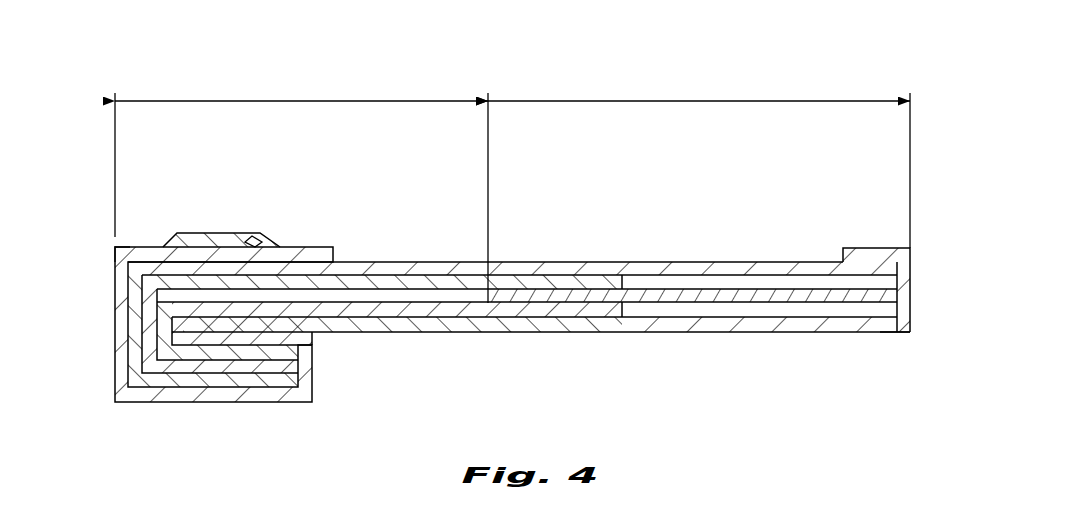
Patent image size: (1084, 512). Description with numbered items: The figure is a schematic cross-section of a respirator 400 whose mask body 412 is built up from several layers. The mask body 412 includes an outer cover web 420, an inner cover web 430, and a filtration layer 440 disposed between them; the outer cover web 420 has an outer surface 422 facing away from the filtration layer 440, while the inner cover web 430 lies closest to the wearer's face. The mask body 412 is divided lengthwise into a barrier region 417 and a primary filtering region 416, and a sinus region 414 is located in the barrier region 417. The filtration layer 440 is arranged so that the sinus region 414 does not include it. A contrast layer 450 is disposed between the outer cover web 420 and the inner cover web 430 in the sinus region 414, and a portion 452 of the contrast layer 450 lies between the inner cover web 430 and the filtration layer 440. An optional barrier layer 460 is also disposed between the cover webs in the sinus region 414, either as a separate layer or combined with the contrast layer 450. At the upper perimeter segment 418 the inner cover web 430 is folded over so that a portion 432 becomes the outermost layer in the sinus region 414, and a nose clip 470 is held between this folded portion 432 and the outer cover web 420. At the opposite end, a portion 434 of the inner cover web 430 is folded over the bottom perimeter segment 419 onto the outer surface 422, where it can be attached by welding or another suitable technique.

The respirator 400 is at (757, 57).
The mask body 412 is at (108, 380).
The sinus region 414 is at (212, 226).
The primary filtering region 416 is at (668, 97).
The barrier region 417 is at (305, 97).
The upper perimeter segment 418 is at (108, 302).
The bottom perimeter segment 419 is at (915, 270).
The outer cover web 420 is at (560, 275).
The outer surface 422 is at (690, 265).
The inner cover web 430 is at (625, 320).
The portion of the inner cover web 432 is at (108, 255).
The portion of the inner cover web 434 is at (910, 336).
The filtration layer 440 is at (812, 302).
The contrast layer 450 is at (448, 322).
The portion of the contrast layer 452 is at (545, 324).
The barrier layer 460 is at (415, 283).
The nose clip 470 is at (252, 243).